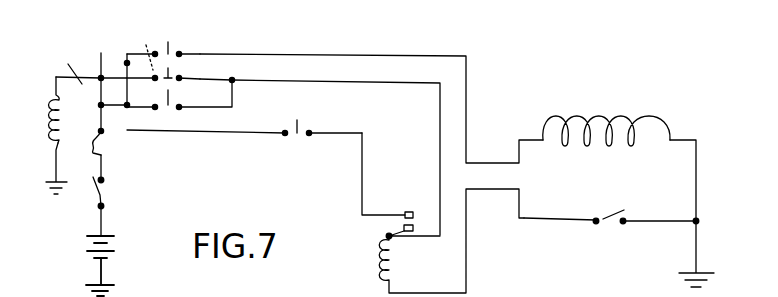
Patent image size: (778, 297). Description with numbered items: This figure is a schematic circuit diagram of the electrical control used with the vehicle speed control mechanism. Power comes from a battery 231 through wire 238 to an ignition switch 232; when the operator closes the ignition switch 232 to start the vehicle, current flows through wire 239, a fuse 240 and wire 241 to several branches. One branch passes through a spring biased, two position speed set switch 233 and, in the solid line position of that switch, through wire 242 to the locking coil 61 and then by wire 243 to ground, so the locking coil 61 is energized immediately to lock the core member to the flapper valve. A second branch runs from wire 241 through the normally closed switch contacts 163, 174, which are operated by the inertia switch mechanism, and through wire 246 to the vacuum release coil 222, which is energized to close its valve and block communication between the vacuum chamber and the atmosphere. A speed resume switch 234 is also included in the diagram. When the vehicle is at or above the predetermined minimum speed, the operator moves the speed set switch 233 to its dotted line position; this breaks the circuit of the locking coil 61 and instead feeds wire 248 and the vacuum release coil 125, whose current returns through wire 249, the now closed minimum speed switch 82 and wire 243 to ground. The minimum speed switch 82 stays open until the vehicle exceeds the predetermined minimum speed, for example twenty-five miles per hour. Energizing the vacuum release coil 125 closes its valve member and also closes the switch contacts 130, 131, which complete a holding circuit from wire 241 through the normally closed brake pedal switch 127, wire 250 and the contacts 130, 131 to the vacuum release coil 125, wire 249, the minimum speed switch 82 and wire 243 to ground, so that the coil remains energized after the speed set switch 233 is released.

The switch contact 163 is at (67, 64).
The switch contact 174 is at (82, 50).
The wire 241 is at (105, 43).
The speed set switch 233 is at (168, 44).
The speed resume switch 234 is at (170, 93).
The wire 242 is at (300, 57).
The wire 248 is at (325, 83).
The brake pedal switch 127 is at (295, 122).
The wire 250 is at (361, 157).
The switch contact 130 is at (408, 212).
The switch contact 131 is at (403, 228).
The vacuum release coil 125 is at (393, 264).
The wire 246 is at (71, 110).
The vacuum release coil 222 is at (62, 145).
The fuse 240 is at (107, 134).
The wire 239 is at (103, 165).
The ignition switch 232 is at (102, 192).
The wire 238 is at (101, 222).
The battery 231 is at (107, 243).
The locking coil 61 is at (626, 124).
The wire 243 is at (696, 186).
The minimum speed switch 82 is at (616, 211).
The wire 249 is at (530, 212).